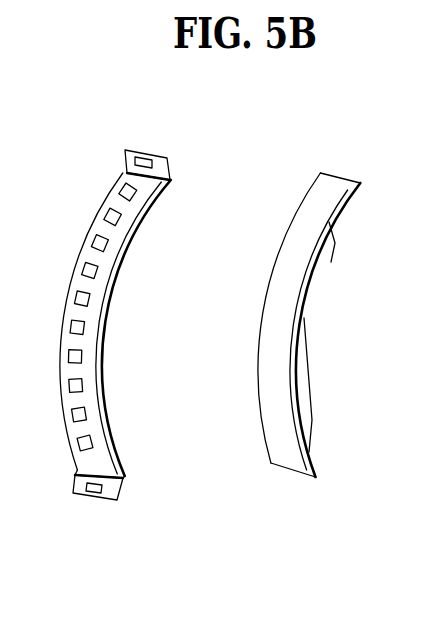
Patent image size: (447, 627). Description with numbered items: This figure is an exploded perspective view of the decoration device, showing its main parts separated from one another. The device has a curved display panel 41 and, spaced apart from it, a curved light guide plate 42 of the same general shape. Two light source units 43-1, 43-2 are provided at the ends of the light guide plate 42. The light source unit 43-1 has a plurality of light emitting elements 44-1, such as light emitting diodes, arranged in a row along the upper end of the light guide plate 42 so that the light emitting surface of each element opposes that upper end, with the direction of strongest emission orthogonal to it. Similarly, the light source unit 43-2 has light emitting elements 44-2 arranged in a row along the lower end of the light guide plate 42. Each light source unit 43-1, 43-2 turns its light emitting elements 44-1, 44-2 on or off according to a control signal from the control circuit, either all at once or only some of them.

The display panel 41 is at (312, 468).
The light guide plate 42 is at (117, 473).
The light source unit 43-1 is at (160, 157).
The light source unit 43-2 is at (103, 503).
The light emitting elements 44-1 is at (125, 157).
The light emitting elements 44-2 is at (80, 481).